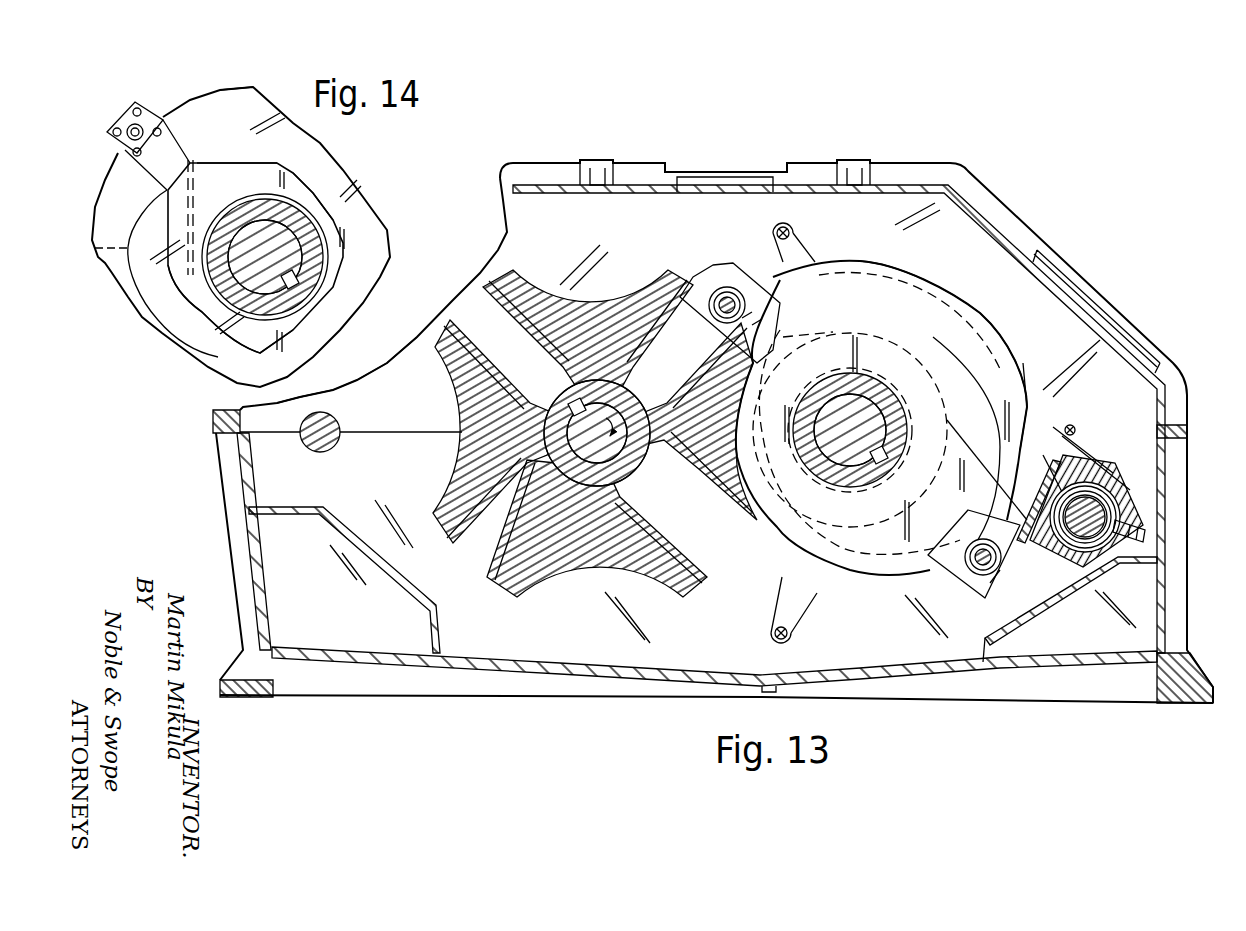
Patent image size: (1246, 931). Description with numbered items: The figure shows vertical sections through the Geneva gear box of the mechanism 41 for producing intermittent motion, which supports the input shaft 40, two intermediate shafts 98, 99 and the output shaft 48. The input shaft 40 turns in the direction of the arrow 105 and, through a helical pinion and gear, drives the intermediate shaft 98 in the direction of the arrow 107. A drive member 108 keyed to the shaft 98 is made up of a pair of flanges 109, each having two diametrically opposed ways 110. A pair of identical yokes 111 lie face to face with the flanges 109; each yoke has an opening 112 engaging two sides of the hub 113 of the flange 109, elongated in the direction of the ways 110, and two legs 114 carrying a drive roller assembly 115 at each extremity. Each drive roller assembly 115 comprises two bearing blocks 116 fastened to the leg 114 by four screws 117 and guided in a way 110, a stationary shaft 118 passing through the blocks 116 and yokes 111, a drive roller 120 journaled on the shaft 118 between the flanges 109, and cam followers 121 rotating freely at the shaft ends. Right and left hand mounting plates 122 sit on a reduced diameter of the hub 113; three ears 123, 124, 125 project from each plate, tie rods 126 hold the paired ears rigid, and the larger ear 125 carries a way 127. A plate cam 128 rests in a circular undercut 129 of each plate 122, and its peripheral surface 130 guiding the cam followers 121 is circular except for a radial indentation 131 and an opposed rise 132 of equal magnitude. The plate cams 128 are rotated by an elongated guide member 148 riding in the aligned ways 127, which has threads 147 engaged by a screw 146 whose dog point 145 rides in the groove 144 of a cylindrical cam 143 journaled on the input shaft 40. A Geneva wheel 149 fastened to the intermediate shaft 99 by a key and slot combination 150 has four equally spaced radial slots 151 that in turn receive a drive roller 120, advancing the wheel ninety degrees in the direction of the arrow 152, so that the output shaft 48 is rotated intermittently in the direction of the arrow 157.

In FIG. 13, the input shaft 40 is at (1092, 498).
In FIG. 13, the mechanism for producing intermittent motion 41 is at (1032, 185).
In FIG. 13, the output shaft 48 is at (327, 437).
In FIG. 14, the intermediate shaft 98 is at (277, 243).
In FIG. 13, the intermediate shaft 98 is at (866, 418).
In FIG. 13, the intermediate shaft 99 is at (567, 450).
In FIG. 13, the arrow 105 is at (1086, 532).
In FIG. 13, the arrow 107 is at (800, 372).
In FIG. 13, the drive member 108 is at (905, 340).
In FIG. 13, the flanges 109 is at (965, 433).
In FIG. 13, the ways 110 is at (712, 288).
In FIG. 14, the yokes 111 is at (291, 169).
In FIG. 13, the yokes 111 is at (945, 410).
In FIG. 14, the opening 112 is at (319, 307).
In FIG. 13, the opening 112 is at (900, 486).
In FIG. 14, the hub 113 is at (215, 313).
In FIG. 14, the legs 114 is at (177, 150).
In FIG. 13, the legs 114 is at (789, 332).
In FIG. 13, the drive roller assembly 115 is at (712, 298).
In FIG. 13, the bearing blocks 116 is at (990, 583).
In FIG. 14, the screws 117 is at (136, 110).
In FIG. 14, the shaft 118 is at (140, 126).
In FIG. 13, the shaft 118 is at (745, 293).
In FIG. 13, the drive roller 120 is at (745, 313).
In FIG. 14, the cam followers 121 is at (123, 150).
In FIG. 14, the mounting plates 122 is at (370, 227).
In FIG. 13, the mounting plates 122 is at (922, 284).
In FIG. 13, the ear 123 is at (800, 250).
In FIG. 13, the ear 124 is at (788, 601).
In FIG. 13, the ear 125 is at (1060, 418).
In FIG. 13, the tie rods 126 is at (779, 227).
In FIG. 13, the way 127 is at (1046, 548).
In FIG. 14, the plate cam 128 is at (250, 97).
In FIG. 13, the plate cam 128 is at (981, 312).
In FIG. 14, the circular undercut 129 is at (127, 276).
In FIG. 14, the peripheral surface 130 is at (117, 183).
In FIG. 13, the peripheral surface 130 is at (994, 332).
In FIG. 13, the indentation 131 is at (687, 480).
In FIG. 13, the rise 132 is at (1022, 368).
In FIG. 13, the cylindrical cam 143 is at (1125, 490).
In FIG. 13, the groove 144 is at (1127, 505).
In FIG. 13, the dog point 145 is at (1080, 528).
In FIG. 13, the screw 146 is at (1143, 532).
In FIG. 13, the threads 147 is at (1135, 520).
In FIG. 13, the elongated guide member 148 is at (1058, 555).
In FIG. 13, the Geneva wheel 149 is at (606, 572).
In FIG. 13, the key and slot combination 150 is at (560, 400).
In FIG. 13, the slots 151 is at (520, 328).
In FIG. 13, the arrow 152 is at (598, 418).
In FIG. 13, the arrow 157 is at (301, 408).